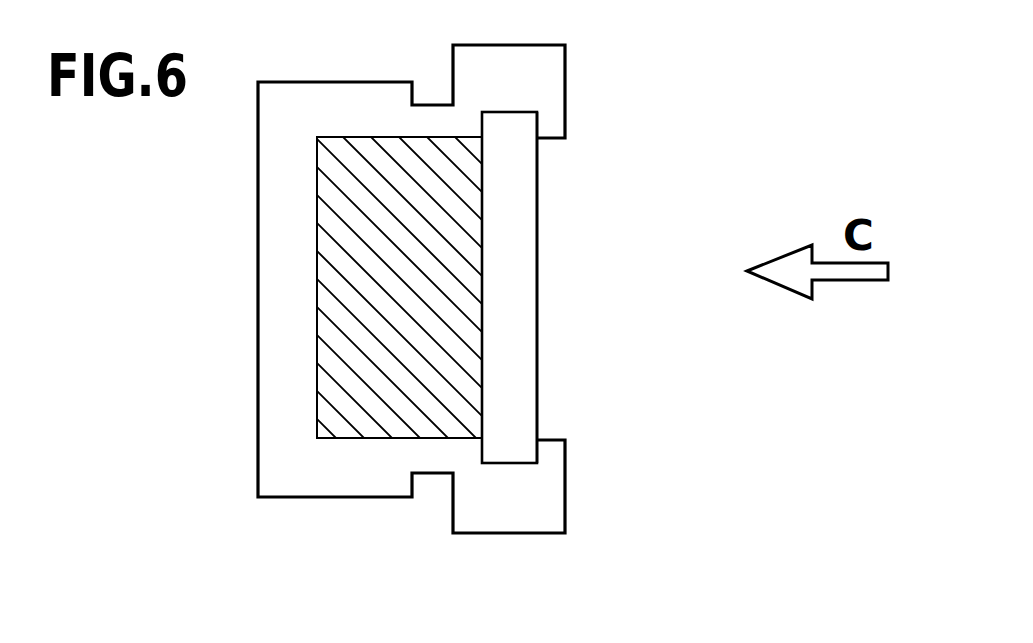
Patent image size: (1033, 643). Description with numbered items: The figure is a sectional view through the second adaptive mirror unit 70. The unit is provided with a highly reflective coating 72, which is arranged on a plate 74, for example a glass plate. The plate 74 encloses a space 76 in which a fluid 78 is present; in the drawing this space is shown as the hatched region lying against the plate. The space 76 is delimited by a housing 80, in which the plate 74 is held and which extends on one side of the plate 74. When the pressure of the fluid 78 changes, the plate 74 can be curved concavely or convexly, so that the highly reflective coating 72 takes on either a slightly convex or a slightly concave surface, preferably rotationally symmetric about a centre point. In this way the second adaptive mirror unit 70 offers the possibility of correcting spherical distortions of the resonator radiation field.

The second adaptive mirror unit 70 is at (625, 70).
The highly reflective coating 72 is at (550, 334).
The plate 74 is at (522, 218).
The space 76 is at (365, 226).
The fluid 78 is at (373, 331).
The housing 80 is at (299, 457).